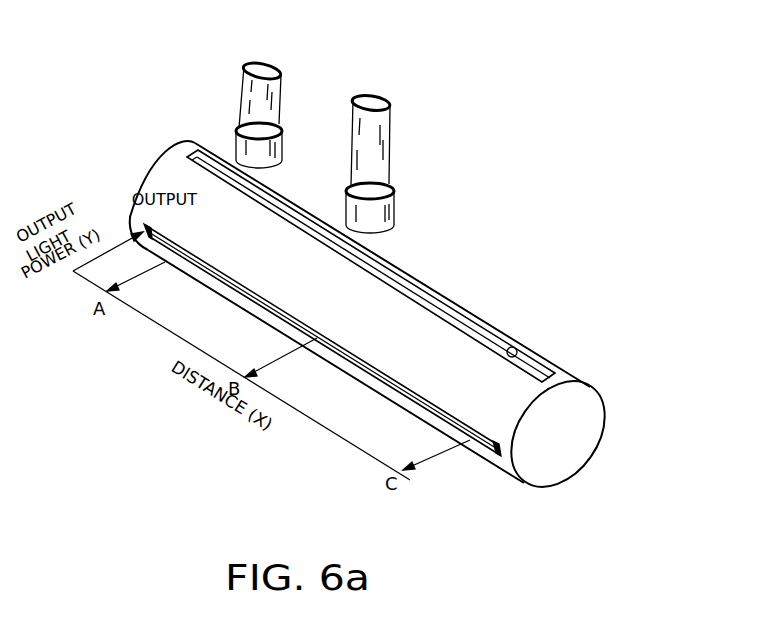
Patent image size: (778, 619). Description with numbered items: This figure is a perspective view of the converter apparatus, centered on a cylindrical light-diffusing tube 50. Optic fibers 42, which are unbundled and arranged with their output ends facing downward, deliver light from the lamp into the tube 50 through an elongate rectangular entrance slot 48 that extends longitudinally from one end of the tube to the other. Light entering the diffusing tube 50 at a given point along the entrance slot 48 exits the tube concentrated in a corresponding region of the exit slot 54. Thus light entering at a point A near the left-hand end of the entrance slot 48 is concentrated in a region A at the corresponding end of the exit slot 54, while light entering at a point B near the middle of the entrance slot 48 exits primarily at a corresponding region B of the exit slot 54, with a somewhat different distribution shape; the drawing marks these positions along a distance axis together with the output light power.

The optic fibers 42 is at (363, 125).
The entrance slot 48 is at (512, 345).
The cylindrical light-diffusing tube 50 is at (587, 445).
The exit slot 54 is at (481, 453).